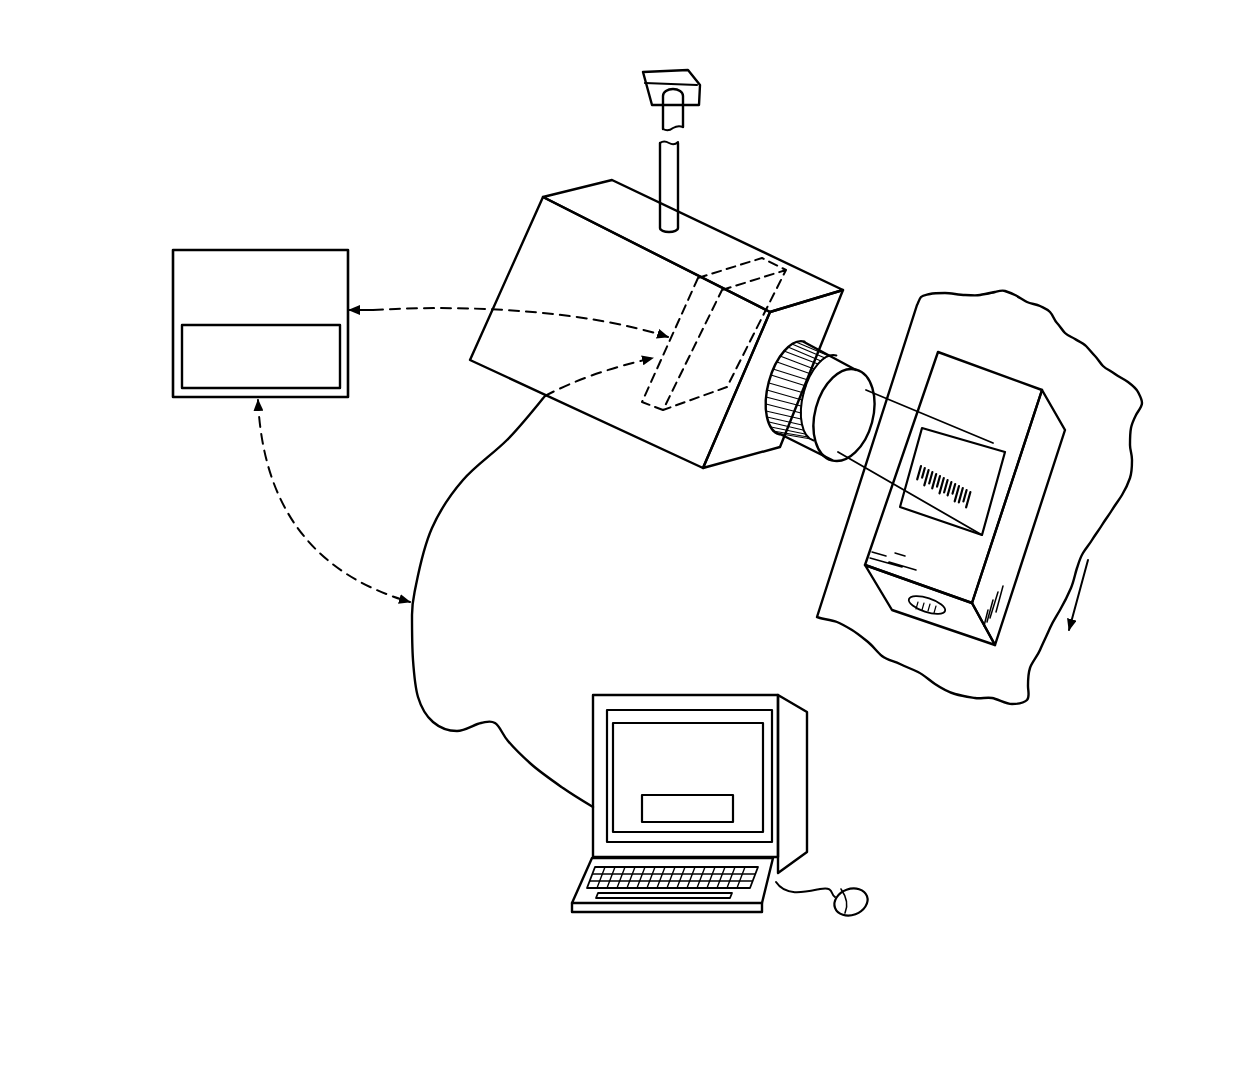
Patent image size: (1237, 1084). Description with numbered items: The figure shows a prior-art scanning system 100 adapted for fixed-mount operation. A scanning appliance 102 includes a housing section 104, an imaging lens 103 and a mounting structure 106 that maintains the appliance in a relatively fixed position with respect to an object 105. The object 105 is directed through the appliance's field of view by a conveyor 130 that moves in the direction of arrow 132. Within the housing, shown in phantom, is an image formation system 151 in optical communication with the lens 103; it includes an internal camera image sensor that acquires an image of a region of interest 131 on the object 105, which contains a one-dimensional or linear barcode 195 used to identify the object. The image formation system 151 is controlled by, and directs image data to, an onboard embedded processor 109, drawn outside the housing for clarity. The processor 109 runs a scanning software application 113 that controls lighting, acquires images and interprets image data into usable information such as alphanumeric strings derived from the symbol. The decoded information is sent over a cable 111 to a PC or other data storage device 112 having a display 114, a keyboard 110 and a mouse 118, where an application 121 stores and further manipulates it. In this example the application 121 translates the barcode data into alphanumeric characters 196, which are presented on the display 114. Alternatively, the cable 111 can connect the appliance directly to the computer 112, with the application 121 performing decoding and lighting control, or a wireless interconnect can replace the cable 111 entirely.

The scanning system 100 is at (1075, 330).
The scanning appliance 102 is at (808, 260).
The imaging lens 103 is at (850, 355).
The housing section 104 is at (630, 442).
The object 105 is at (1028, 510).
The mounting structure 106 is at (679, 193).
The onboard embedded processor 109 is at (305, 250).
The keyboard 110 is at (763, 901).
The cable 111 is at (415, 673).
The PC or other data storage device 112 is at (796, 840).
The scanning software application 113 is at (320, 390).
The display 114 is at (745, 711).
The mouse 118 is at (853, 888).
The application 121 is at (670, 720).
The conveyor 130 is at (1139, 404).
The region of interest 131 is at (988, 433).
The arrow 132 is at (1084, 580).
The image formation system 151 is at (695, 408).
The one-dimensional barcode 195 is at (977, 470).
The alphanumeric characters 196 is at (735, 803).